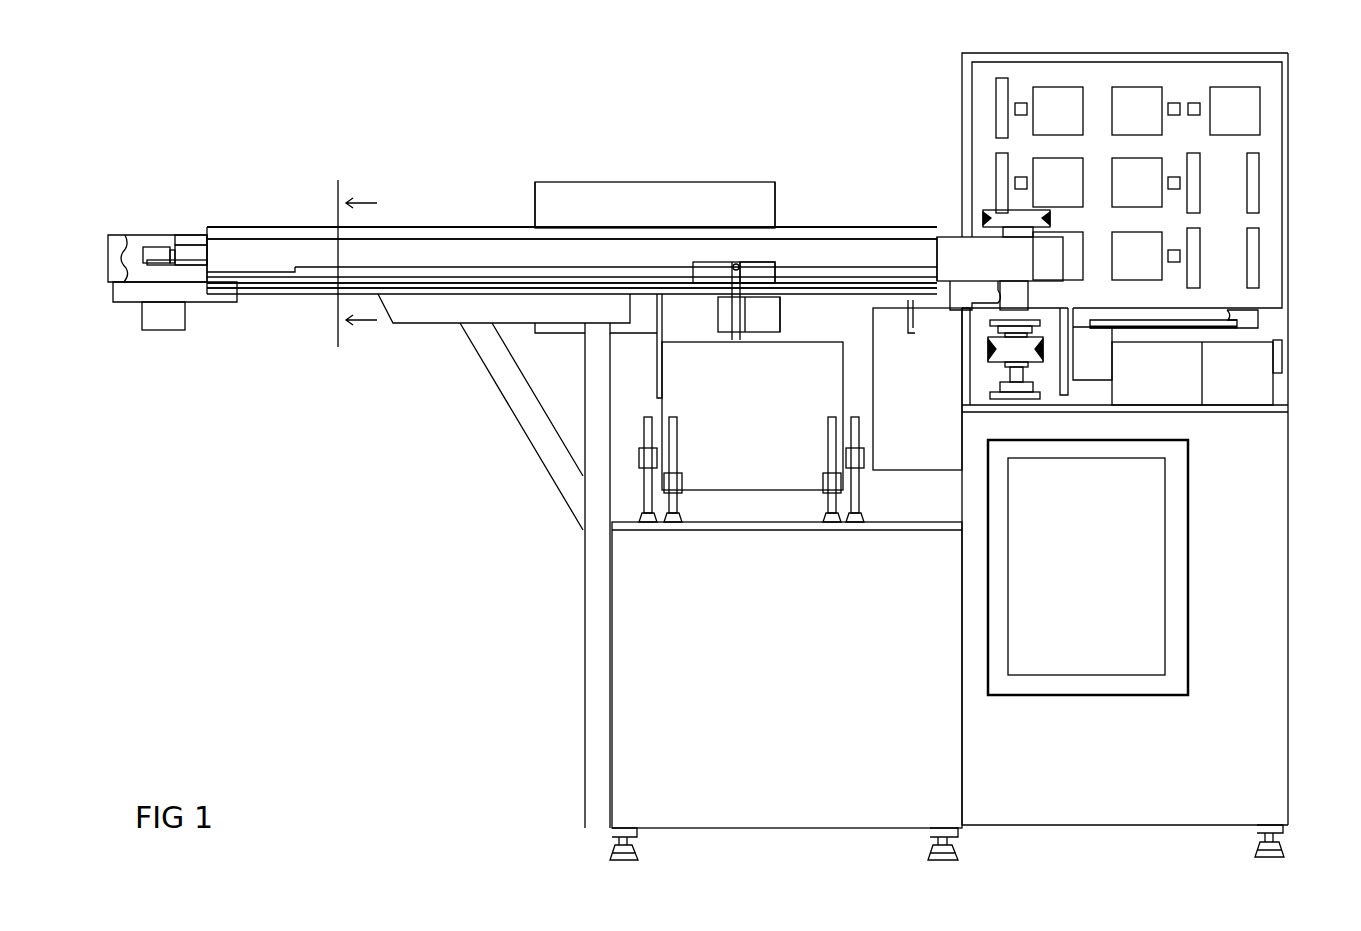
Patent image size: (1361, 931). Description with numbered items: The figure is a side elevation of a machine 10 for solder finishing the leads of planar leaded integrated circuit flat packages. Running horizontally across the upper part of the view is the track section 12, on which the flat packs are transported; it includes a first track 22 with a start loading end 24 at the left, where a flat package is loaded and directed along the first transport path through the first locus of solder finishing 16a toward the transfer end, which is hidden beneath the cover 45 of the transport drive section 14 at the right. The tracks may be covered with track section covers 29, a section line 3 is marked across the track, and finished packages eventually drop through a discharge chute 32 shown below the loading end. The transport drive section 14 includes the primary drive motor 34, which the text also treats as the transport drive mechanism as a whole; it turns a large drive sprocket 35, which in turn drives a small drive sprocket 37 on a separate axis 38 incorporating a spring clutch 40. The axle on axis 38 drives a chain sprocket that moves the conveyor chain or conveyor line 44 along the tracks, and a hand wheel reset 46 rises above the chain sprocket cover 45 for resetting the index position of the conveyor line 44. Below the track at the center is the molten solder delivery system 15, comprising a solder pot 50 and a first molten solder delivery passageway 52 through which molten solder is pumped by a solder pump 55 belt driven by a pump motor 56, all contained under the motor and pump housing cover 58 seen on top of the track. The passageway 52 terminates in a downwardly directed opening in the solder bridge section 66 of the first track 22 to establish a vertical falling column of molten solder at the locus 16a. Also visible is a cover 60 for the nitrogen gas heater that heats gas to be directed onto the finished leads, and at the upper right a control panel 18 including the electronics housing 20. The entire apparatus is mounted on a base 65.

The machine 10 is at (571, 62).
The section line 3 is at (353, 262).
The track section 12 is at (453, 207).
The transport drive section 14 is at (956, 224).
The molten solder delivery system 15 is at (792, 332).
The first locus of solder finishing 16a is at (758, 255).
The control panel 18 is at (1208, 200).
The electronics housing 20 is at (1053, 564).
The first track 22 is at (268, 284).
The start loading end 24 is at (200, 292).
The track section covers 29 is at (500, 227).
The discharge chute 32 is at (158, 333).
The primary drive motor 34 is at (1140, 382).
The large drive sprocket 35 is at (1208, 320).
The small drive sprocket 37 is at (990, 322).
The separate axis 38 is at (1005, 378).
The spring clutch 40 is at (988, 348).
The conveyor chain 44 is at (136, 254).
The chain sprocket cover 45 is at (973, 270).
The hand wheel reset 46 is at (985, 220).
The solder pot 50 is at (730, 470).
The first molten solder delivery passageway 52 is at (736, 342).
The solder pump 55 is at (720, 218).
The pump motor 56 is at (548, 218).
The motor and pump housing cover 58 is at (657, 182).
The cover for the nitrogen gas heater 60 is at (909, 471).
The base 65 is at (772, 674).
The solder bridge section 66 is at (697, 262).